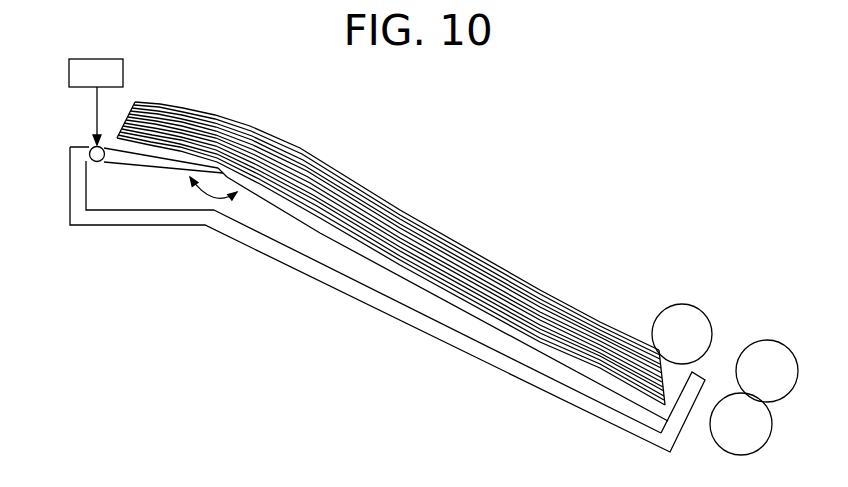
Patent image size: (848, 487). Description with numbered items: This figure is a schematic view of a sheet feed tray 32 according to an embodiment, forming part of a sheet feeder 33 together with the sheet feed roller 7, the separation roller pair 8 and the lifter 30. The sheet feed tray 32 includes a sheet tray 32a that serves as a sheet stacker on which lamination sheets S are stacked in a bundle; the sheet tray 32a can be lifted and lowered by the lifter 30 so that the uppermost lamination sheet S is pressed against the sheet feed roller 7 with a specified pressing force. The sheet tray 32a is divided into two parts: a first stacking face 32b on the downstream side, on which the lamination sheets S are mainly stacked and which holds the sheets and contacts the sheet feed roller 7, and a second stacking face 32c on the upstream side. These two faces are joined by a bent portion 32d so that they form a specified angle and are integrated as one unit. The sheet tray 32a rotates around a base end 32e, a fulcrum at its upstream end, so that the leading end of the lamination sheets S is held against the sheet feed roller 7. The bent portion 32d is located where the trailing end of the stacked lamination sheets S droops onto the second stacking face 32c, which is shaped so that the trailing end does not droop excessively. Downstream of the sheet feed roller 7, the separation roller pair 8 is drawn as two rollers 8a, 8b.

The lifter 30 is at (123, 73).
The sheet feed tray 32 is at (325, 285).
The sheet tray 32a is at (405, 297).
The first stacking face 32b is at (530, 350).
The second stacking face 32c is at (150, 168).
The bent portion 32d is at (219, 163).
The base end 32e is at (89, 156).
The sheet feeder 33 is at (596, 176).
The lamination sheet S is at (433, 227).
The sheet feed roller 7 is at (683, 304).
The separation roller pair 8 is at (746, 377).
The upper conveyance roller 8a is at (769, 340).
The lower conveyance roller 8b is at (713, 436).